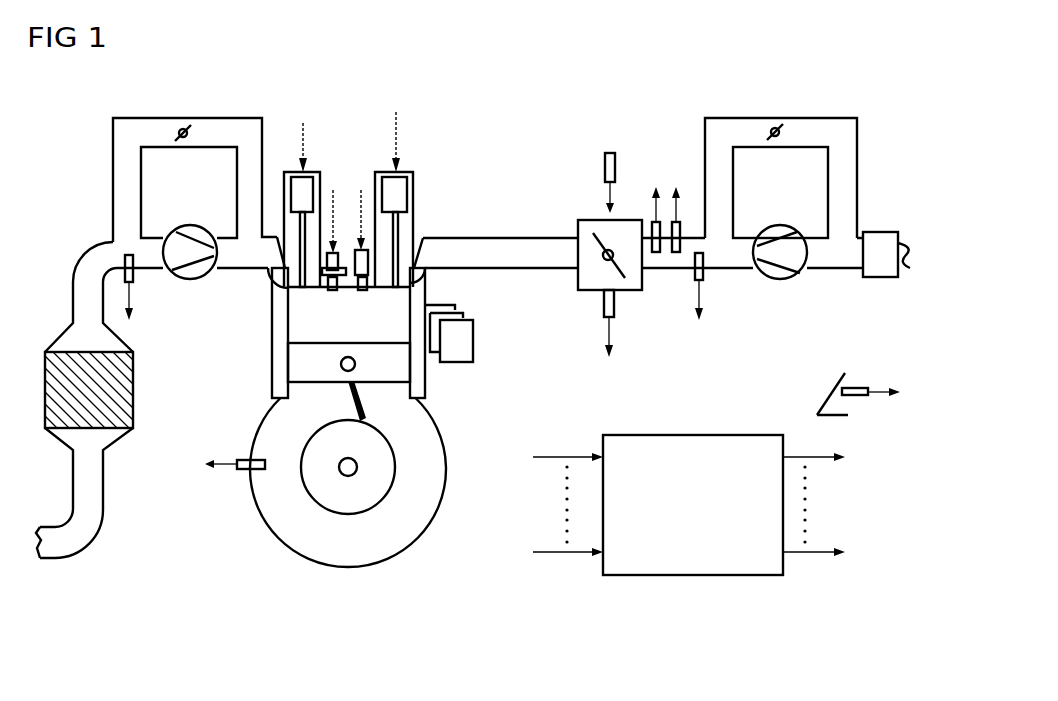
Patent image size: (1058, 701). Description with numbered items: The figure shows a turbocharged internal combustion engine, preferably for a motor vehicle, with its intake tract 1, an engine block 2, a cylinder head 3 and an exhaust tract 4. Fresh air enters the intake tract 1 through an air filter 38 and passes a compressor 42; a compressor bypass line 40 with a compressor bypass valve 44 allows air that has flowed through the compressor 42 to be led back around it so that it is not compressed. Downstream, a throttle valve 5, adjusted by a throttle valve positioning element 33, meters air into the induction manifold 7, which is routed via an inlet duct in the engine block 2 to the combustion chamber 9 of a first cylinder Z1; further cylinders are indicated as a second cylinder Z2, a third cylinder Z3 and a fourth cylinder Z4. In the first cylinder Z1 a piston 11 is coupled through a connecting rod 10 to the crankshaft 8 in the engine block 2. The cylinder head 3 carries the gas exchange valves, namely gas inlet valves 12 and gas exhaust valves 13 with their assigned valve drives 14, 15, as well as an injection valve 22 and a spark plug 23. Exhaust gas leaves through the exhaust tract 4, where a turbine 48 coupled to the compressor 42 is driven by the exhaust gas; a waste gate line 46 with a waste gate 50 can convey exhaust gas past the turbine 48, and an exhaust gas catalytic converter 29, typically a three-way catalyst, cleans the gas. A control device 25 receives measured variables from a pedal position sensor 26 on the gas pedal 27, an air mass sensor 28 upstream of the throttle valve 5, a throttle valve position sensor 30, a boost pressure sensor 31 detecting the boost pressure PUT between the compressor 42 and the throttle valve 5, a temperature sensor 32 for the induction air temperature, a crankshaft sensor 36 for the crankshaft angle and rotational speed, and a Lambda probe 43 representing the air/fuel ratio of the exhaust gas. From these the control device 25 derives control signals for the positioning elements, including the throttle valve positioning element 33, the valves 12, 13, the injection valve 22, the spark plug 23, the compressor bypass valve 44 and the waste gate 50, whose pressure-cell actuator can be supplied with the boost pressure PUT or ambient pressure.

The intake tract 1 is at (626, 116).
The engine block 2 is at (246, 322).
The cylinder head 3 is at (413, 137).
The exhaust tract 4 is at (76, 246).
The throttle valve 5 is at (595, 220).
The induction manifold 7 is at (490, 237).
The crankshaft 8 is at (357, 471).
The combustion chamber 9 is at (288, 335).
The connecting rod 10 is at (350, 408).
The piston 11 is at (380, 372).
The gas inlet valves 12 is at (397, 290).
The gas exhaust valves 13 is at (300, 288).
The valve drive 14 is at (393, 180).
The valve drive 15 is at (297, 180).
The injection valve 22 is at (361, 292).
The spark plug 23 is at (332, 292).
The control device 25 is at (692, 435).
The pedal position sensor 26 is at (862, 388).
The gas pedal 27 is at (831, 395).
The air mass sensor 28 is at (652, 230).
The exhaust gas catalytic converter 29 is at (134, 396).
The throttle valve position sensor 30 is at (606, 312).
The boost pressure sensor 31 is at (697, 278).
The temperature sensor 32 is at (680, 225).
The throttle valve positioning element 33 is at (616, 160).
The crankshaft sensor 36 is at (240, 470).
The air filter 38 is at (880, 232).
The compressor bypass line 40 is at (800, 128).
The compressor 42 is at (781, 280).
The Lambda probe 43 is at (127, 258).
The compressor bypass valve 44 is at (772, 128).
The waste gate line 46 is at (205, 126).
The turbine 48 is at (188, 280).
The waste gate 50 is at (179, 128).
The boost pressure PUT is at (727, 258).
The first cylinder Z1 is at (424, 385).
The second cylinder Z2 is at (458, 307).
The third cylinder Z3 is at (465, 316).
The fourth cylinder Z4 is at (460, 352).